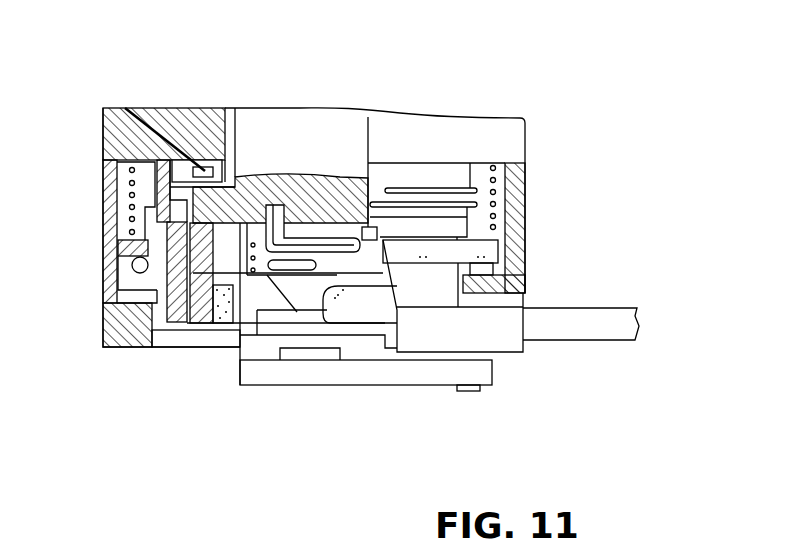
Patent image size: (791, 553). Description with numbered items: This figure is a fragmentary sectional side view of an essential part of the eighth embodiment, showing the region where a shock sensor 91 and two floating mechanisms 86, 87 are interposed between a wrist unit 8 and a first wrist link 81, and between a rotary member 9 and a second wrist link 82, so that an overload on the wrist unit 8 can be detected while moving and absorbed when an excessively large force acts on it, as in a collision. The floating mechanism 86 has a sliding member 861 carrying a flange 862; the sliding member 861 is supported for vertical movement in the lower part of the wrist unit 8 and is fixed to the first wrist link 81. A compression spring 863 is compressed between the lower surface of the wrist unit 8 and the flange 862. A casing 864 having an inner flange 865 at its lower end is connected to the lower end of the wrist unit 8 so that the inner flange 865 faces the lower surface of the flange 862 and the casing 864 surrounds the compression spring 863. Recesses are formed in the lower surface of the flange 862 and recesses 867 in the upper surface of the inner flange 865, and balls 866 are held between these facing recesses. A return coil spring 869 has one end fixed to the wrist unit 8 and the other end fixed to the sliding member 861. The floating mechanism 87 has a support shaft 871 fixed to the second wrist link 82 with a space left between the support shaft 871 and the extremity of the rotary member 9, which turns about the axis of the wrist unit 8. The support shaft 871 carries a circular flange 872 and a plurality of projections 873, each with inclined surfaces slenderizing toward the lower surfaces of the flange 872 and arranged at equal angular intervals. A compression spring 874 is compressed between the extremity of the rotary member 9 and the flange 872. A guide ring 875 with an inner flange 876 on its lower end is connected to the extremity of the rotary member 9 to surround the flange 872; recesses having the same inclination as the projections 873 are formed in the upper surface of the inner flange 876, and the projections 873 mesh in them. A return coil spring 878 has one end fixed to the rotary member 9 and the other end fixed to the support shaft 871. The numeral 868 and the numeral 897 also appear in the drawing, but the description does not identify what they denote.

The wrist unit 8 is at (112, 126).
The rotary member 9 is at (304, 128).
The shock sensor 91 is at (125, 108).
The first wrist link 81 is at (108, 333).
The second wrist link 82 is at (487, 373).
The floating mechanism 86 is at (68, 450).
The floating mechanism 87 is at (348, 535).
The sliding member 861 is at (173, 260).
The flange 862 is at (132, 248).
The compression spring 863 is at (130, 169).
The casing 864 is at (110, 195).
The inner flange 865 is at (148, 284).
The balls 866 is at (152, 263).
The recesses 867 is at (138, 306).
The piston 868 is at (150, 290).
The return coil spring 869 is at (478, 192).
The support shaft 871 is at (350, 327).
The circular flange 872 is at (283, 300).
The projections 873 is at (251, 330).
The compression spring 874 is at (298, 257).
The guide ring 875 is at (206, 330).
The inner flange 876 is at (233, 330).
The return coil spring 878 is at (297, 253).
The stop 897 is at (252, 230).